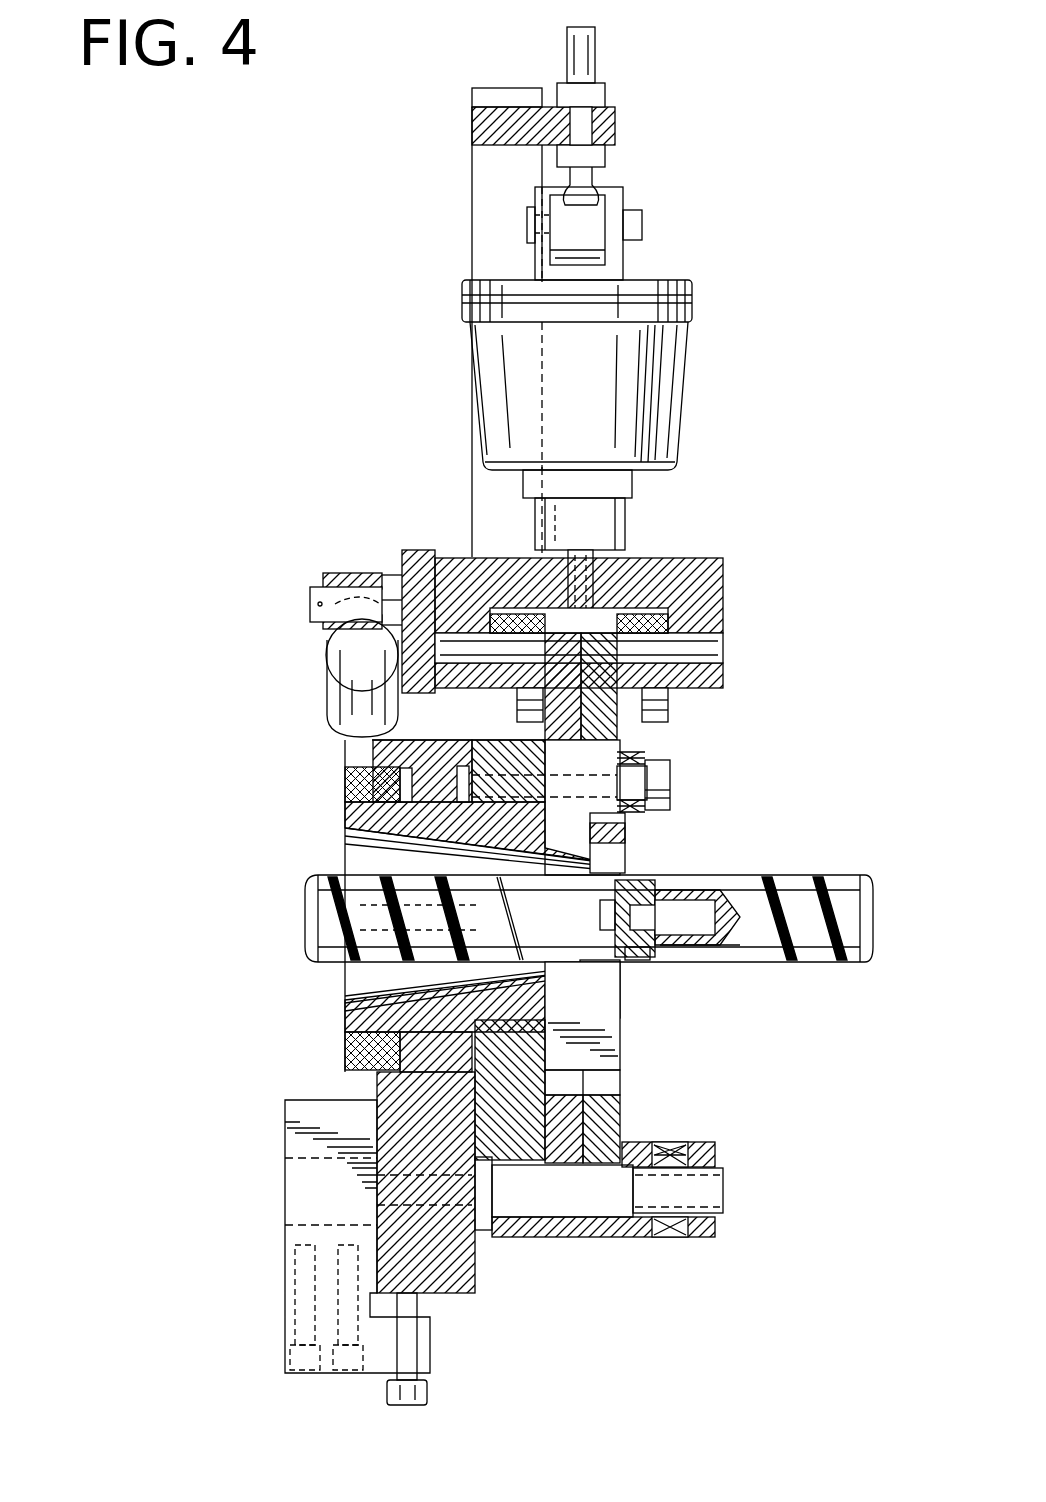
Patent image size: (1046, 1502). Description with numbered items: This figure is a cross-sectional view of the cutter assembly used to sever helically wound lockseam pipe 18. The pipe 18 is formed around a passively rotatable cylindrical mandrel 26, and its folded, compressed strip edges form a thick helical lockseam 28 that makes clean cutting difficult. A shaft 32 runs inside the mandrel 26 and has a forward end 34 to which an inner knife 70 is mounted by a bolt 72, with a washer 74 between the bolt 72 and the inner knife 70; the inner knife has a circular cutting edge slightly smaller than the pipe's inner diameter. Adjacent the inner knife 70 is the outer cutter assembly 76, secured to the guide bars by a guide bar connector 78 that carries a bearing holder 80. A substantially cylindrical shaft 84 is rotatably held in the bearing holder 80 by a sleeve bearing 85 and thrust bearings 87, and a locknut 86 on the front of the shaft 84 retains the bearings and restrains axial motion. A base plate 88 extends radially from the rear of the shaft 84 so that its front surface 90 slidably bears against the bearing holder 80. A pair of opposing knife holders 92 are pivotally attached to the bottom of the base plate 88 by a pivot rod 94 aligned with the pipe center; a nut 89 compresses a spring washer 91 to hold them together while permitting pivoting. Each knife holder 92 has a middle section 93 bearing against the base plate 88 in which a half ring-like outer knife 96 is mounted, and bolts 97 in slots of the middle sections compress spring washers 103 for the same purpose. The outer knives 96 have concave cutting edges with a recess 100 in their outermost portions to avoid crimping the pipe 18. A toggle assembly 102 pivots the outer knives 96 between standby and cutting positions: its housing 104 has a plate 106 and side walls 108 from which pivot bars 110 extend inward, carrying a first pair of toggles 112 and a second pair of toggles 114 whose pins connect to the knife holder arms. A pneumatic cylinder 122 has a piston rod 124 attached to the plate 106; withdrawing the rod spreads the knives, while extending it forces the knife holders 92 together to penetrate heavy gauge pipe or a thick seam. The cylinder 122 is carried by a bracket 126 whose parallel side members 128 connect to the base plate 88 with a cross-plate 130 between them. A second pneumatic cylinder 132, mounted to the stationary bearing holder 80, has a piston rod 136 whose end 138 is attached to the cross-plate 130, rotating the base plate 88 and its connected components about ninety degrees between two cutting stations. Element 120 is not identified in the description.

The pipe 18 is at (595, 908).
The mandrel 26 is at (804, 918).
The lockseam 28 is at (815, 962).
The shaft 32 is at (722, 880).
The forward end 34 is at (700, 955).
The inner knife 70 is at (655, 878).
The bolt 72 is at (635, 962).
The washer 74 is at (598, 905).
The outer cutter assembly 76 is at (762, 162).
The guide bar connector 78 is at (287, 1105).
The bearing holder 80 is at (465, 1297).
The shaft 84 is at (385, 830).
The sleeve bearing 85 is at (470, 840).
The locknut 86 is at (345, 790).
The thrust bearings 87 is at (355, 805).
The base plate 88 is at (520, 1240).
The nut 89 is at (700, 1145).
The front surface 90 is at (478, 1125).
The spring washer 91 is at (665, 1140).
The knife holders 92 is at (575, 1240).
The middle section 93 is at (625, 1045).
The pivot rod 94 is at (724, 1190).
The outer knives 96 is at (630, 835).
The bolts 97 is at (672, 780).
The recess 100 is at (615, 862).
The toggle assembly 102 is at (593, 662).
The spring washers 103 is at (640, 752).
The housing 104 is at (660, 555).
The plate 106 is at (690, 562).
The side walls 108 is at (725, 605).
The pivot bars 110 is at (725, 645).
The first pair of toggles 112 is at (579, 600).
The second pair of toggles 114 is at (630, 745).
The seal 120 is at (579, 630).
The pneumatic cylinder 122 is at (690, 372).
The piston rod 124 is at (585, 555).
The bracket 126 is at (468, 185).
The side members 128 is at (472, 245).
The cross-plate 130 is at (412, 548).
The second pneumatic cylinder 132 is at (330, 690).
The piston rod 136 is at (312, 625).
The end 138 is at (342, 575).